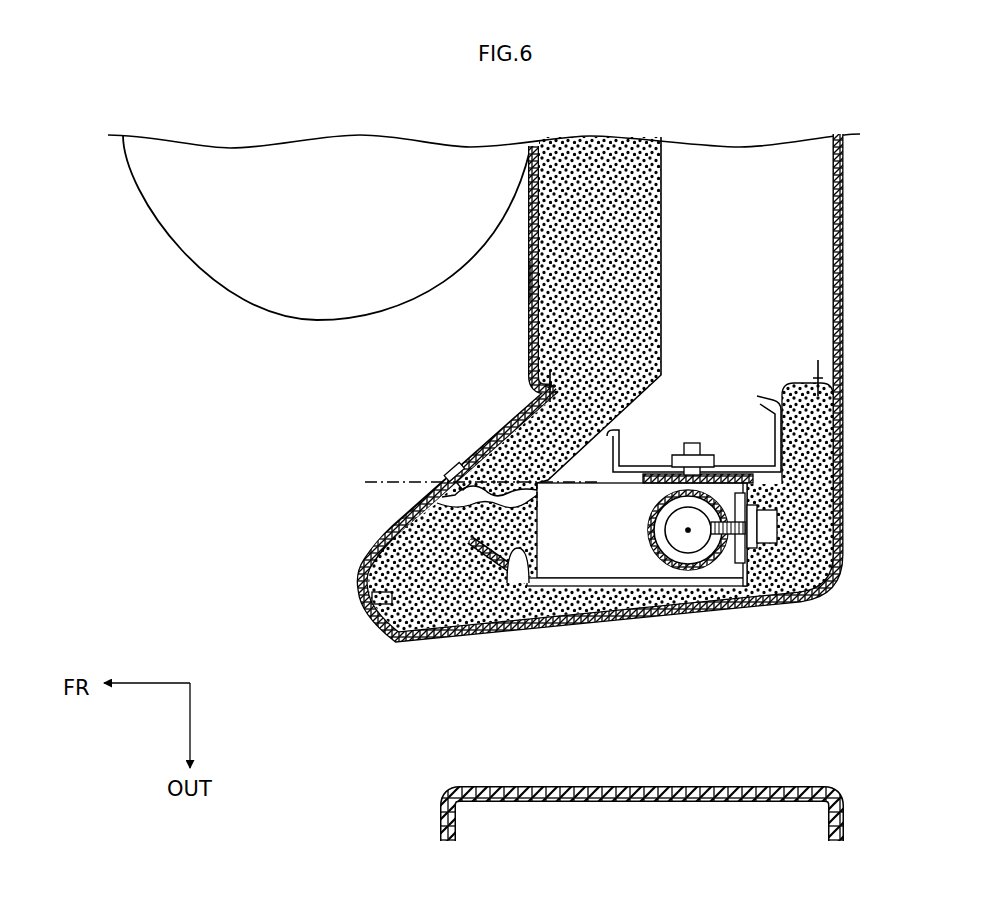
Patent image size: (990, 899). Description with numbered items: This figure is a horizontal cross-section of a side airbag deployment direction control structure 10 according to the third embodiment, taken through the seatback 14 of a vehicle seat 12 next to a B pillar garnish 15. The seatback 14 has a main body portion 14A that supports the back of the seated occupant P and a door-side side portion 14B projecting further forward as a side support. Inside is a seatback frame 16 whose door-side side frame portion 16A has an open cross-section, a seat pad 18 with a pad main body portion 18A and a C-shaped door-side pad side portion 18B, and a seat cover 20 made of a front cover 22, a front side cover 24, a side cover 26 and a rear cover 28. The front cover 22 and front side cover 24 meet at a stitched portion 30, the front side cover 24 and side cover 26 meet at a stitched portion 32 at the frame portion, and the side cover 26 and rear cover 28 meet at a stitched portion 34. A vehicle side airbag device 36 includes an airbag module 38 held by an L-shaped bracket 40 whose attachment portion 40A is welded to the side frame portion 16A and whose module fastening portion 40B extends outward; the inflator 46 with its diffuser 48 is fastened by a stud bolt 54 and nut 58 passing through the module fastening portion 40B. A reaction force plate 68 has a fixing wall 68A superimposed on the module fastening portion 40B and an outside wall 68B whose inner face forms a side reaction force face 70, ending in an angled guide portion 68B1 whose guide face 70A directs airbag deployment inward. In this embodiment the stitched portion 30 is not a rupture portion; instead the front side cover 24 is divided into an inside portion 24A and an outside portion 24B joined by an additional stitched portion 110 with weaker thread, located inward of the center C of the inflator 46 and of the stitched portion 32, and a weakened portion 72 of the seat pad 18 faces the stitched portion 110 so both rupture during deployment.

The vehicle door structure 10 is at (292, 405).
The vehicle seat 12 is at (600, 385).
The seatback 14 is at (670, 385).
The main body portion 14A is at (520, 242).
The door-side side portion 14B is at (325, 585).
The B pillar garnish 15 is at (807, 785).
The seatback frame 16 is at (778, 400).
The door-side side frame portion 16A is at (600, 465).
The seat pad 18 is at (600, 317).
The pad main body portion 18A is at (663, 265).
The door-side pad side portion 18B is at (553, 465).
The seat cover 20 is at (553, 498).
The front cover 22 is at (530, 262).
The front side cover 24 is at (470, 441).
The inside portion 24A is at (503, 420).
The outside portion 24B is at (430, 463).
The side cover 26 is at (650, 583).
The rear cover 28 is at (842, 262).
The stitched portion 30 is at (527, 385).
The stitched portion 32 is at (350, 605).
The stitched portion 34 is at (826, 380).
The vehicle side airbag device 36 is at (365, 482).
The airbag module 38 is at (436, 494).
The bracket 40 is at (742, 514).
The attachment portion 40A is at (752, 514).
The module fastening portion 40B is at (817, 587).
The inflator 46 is at (705, 570).
The diffuser 48 is at (705, 542).
The stud bolt 54 is at (688, 443).
The nut 58 is at (708, 455).
The reaction force plate 68 is at (668, 598).
The fixing wall 68A is at (668, 596).
The outside wall 68B is at (575, 602).
The guide portion 68B1 is at (473, 548).
The side reaction force face 70 is at (554, 633).
The guide face 70A is at (504, 572).
The weakened portion 72 is at (540, 497).
The stitched portion 110 is at (437, 467).
The center C is at (688, 530).
The occupant P is at (173, 257).